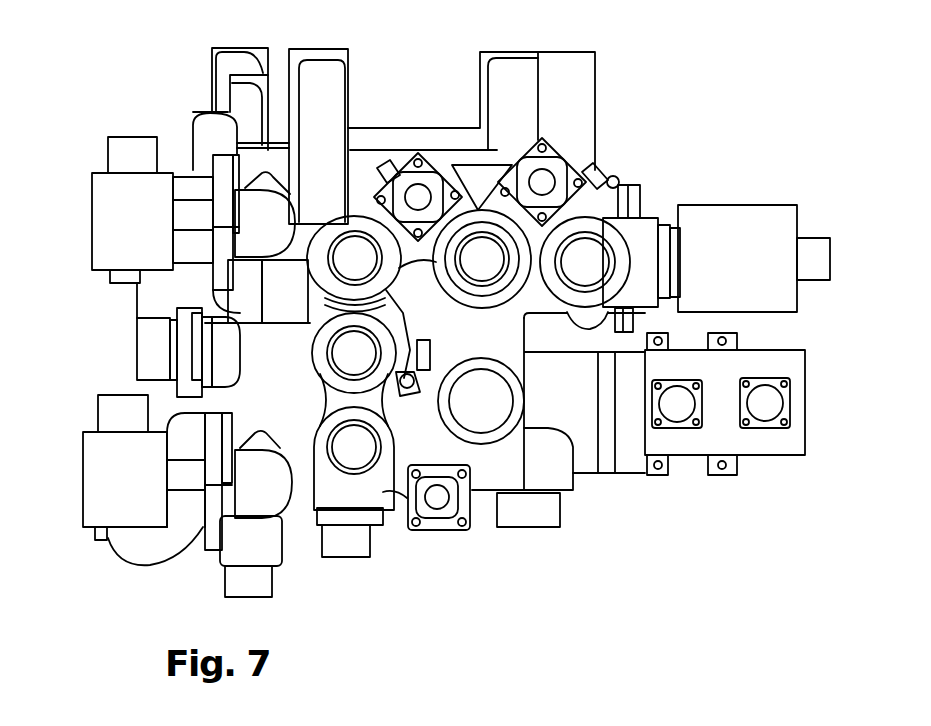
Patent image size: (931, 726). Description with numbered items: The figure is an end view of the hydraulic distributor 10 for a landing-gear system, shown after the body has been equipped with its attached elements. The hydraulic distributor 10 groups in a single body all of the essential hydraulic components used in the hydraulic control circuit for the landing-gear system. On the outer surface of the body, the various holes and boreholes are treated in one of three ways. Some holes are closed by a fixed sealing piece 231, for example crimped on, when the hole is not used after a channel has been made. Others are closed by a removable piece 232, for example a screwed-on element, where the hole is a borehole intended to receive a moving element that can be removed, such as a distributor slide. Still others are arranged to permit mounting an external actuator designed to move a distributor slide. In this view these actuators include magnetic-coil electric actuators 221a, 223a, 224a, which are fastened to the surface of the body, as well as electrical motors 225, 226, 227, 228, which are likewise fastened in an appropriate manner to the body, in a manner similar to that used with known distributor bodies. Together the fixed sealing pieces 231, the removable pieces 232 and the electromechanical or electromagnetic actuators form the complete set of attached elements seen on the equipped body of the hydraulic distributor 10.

The hydraulic distributor 10 is at (394, 322).
The fixed sealing piece 231 is at (290, 138).
The removable piece 232 is at (597, 262).
The magnetic-coil electric actuator 224a is at (418, 197).
The magnetic-coil electric actuator 221a is at (545, 175).
The magnetic-coil electric actuator 223a is at (440, 497).
The electrical motor 225 is at (772, 297).
The electrical motor 226 is at (117, 215).
The electrical motor 227 is at (105, 477).
The electrical motor 228 is at (774, 437).